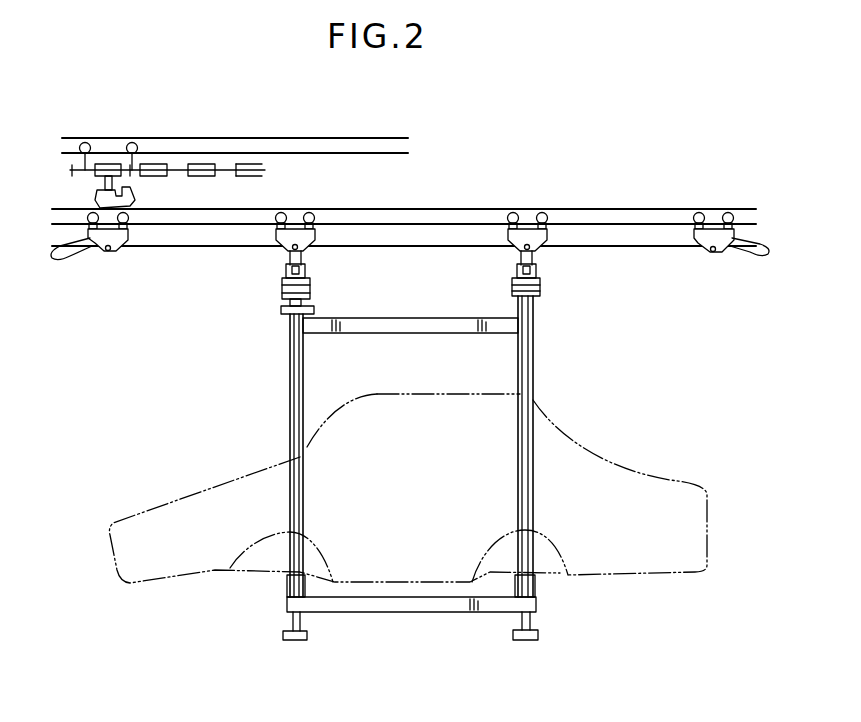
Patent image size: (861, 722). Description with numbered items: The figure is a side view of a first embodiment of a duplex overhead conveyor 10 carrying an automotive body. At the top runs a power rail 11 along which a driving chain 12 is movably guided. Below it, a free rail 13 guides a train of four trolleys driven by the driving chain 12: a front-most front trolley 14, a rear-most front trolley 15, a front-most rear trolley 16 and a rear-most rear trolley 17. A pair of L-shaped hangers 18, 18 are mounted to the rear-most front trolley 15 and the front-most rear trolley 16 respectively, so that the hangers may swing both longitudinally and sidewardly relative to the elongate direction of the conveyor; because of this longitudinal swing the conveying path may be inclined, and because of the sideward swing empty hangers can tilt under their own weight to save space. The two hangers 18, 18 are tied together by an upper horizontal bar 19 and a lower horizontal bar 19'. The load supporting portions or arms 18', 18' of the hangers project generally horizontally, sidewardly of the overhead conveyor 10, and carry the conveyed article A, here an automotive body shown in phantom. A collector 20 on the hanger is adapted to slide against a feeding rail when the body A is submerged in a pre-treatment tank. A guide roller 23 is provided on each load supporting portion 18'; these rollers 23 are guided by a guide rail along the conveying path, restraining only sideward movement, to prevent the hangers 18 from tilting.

The duplex overhead conveyor 10 is at (404, 163).
The power rail 11 is at (238, 137).
The driving chain 12 is at (253, 174).
The free rail 13 is at (657, 213).
The front-most front trolley 14 is at (120, 251).
The rear-most front trolley 15 is at (310, 235).
The front-most rear trolley 16 is at (513, 232).
The rear-most rear trolley 17 is at (706, 244).
The L-shaped hanger 18 is at (405, 446).
The load supporting portion 18' is at (412, 608).
The upper horizontal bar 19 is at (410, 311).
The lower horizontal bar 19' is at (411, 651).
The collector 20 is at (280, 310).
The guide roller 23 is at (295, 645).
The conveyed article A is at (632, 478).